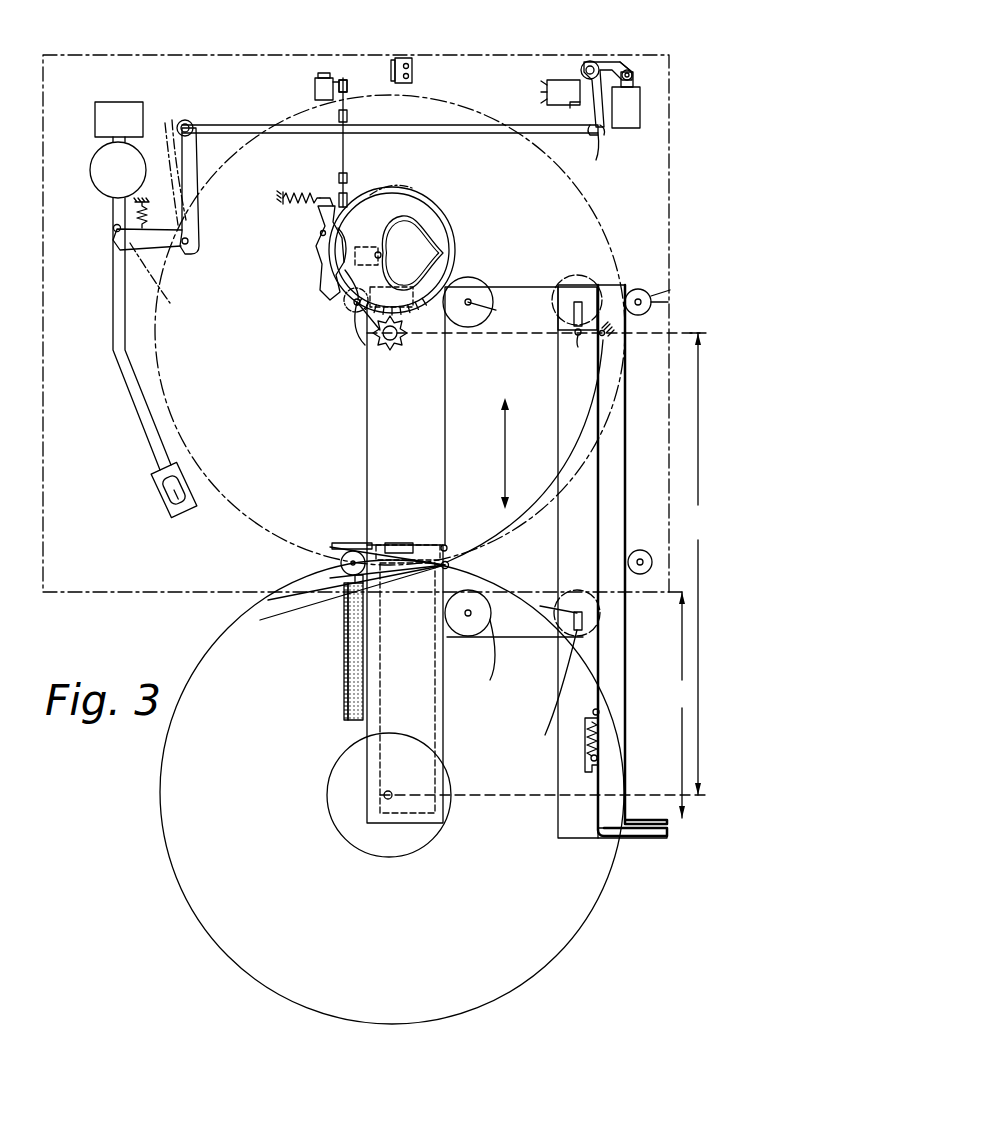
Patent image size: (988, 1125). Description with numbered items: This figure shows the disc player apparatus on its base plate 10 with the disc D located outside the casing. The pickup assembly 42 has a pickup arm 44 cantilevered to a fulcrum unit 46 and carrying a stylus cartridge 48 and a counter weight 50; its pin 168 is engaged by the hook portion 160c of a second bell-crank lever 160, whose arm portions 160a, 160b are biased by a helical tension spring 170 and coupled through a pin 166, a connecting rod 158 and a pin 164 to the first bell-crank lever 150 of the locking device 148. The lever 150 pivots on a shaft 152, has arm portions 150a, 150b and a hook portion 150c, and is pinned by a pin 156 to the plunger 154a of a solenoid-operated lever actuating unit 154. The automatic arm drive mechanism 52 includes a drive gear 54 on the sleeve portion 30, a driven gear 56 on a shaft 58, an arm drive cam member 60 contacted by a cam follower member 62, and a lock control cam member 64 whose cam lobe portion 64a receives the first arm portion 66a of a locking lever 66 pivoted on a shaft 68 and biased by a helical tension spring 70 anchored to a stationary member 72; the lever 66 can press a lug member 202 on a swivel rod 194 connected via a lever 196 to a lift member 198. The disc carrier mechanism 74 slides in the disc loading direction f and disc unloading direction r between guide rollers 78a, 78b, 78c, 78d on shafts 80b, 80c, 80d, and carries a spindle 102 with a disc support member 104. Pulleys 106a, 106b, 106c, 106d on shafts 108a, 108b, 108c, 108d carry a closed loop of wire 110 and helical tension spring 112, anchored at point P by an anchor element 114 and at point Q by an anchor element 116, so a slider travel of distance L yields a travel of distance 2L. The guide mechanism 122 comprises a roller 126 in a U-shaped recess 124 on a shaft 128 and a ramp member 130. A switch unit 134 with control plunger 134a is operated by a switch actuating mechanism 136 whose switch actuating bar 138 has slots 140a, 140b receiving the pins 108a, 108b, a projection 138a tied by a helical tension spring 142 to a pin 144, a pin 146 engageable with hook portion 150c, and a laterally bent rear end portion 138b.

The base plate 10 is at (81, 574).
The sleeve portion 30 is at (384, 350).
The pickup assembly 42 is at (112, 450).
The pickup arm 44 is at (113, 357).
The fulcrum unit 46 is at (91, 190).
The stylus cartridge 48 is at (166, 507).
The counter weight 50 is at (95, 108).
The automatic arm drive mechanism 52 is at (462, 226).
The drive gear 54 is at (406, 341).
The driven gear 56 is at (450, 200).
The shaft 58 is at (381, 256).
The arm drive cam member 60 is at (416, 216).
The reciprocating cam follower member 62 is at (348, 305).
The lock control cam member 64 is at (392, 192).
The cam lobe portion 64a is at (339, 274).
The locking lever 66 is at (312, 234).
The first arm portion 66a is at (322, 238).
The shaft 68 is at (322, 234).
The helical tension spring 70 is at (274, 187).
The stationary member 72 is at (273, 194).
The disc carrier mechanism 74 is at (338, 466).
The guide roller 78a is at (640, 549).
The guide roller 78b is at (658, 296).
The guide roller 78c is at (360, 310).
The guide roller 78d is at (310, 556).
The shaft 80b is at (666, 298).
The shaft 80c is at (365, 345).
The shaft 80d is at (308, 578).
The spindle 102 is at (392, 793).
The disc support member 104 is at (343, 857).
The pulley 106a is at (550, 620).
The pulley 106b is at (573, 287).
The pulley 106c is at (500, 265).
The pulley 106d is at (491, 662).
The shaft 108a is at (570, 592).
The shaft 108b is at (615, 290).
The shaft 108c is at (496, 310).
The shaft 108d is at (467, 618).
The wire 110 is at (445, 442).
The helical tension spring 112 is at (445, 548).
The anchor element 114 is at (616, 333).
The anchor element 116 is at (425, 567).
The guide mechanism 122 is at (432, 74).
The U-shaped recess 124 is at (355, 542).
The cylindrical roller 126 is at (396, 542).
The shaft 128 is at (237, 528).
The ramp member 130 is at (396, 58).
The switch unit 134 is at (556, 80).
The control plunger 134a is at (575, 104).
The switch actuating mechanism 136 is at (548, 775).
The switch actuating bar 138 is at (560, 460).
The projection 138a is at (599, 714).
The rear end portion 138b is at (627, 839).
The elongated slot 140a is at (539, 690).
The elongated slot 140b is at (575, 334).
The helical tension spring 142 is at (600, 740).
The pin 144 is at (597, 762).
The pin 146 is at (577, 342).
The locking device 148 is at (640, 62).
The first bell-crank lever 150 is at (590, 62).
The first arm portion 150a is at (626, 64).
The second arm portion 150b is at (605, 130).
The hook portion 150c is at (596, 130).
The shaft 152 is at (594, 62).
The solenoid-operated lever actuating unit 154 is at (640, 126).
The plunger 154a is at (633, 84).
The pin 156 is at (632, 74).
The connecting rod 158 is at (472, 133).
The second bell-crank lever 160 is at (195, 254).
The first arm portion 160a is at (193, 173).
The second arm portion 160b is at (175, 310).
The hook portion 160c is at (114, 246).
The pin 164 is at (597, 145).
The pin 166 is at (187, 122).
The pin 168 is at (108, 230).
The helical tension spring 170 is at (122, 214).
The swivel rod 194 is at (341, 160).
The lever 196 is at (343, 80).
The lift member 198 is at (315, 84).
The lug member 202 is at (338, 196).
The anchor point P is at (604, 335).
The anchor point Q is at (448, 565).
The disc D is at (216, 934).
The distance L is at (542, 705).
The distance 2L is at (692, 564).
The disc loading direction f is at (503, 410).
The disc unloading direction r is at (506, 501).